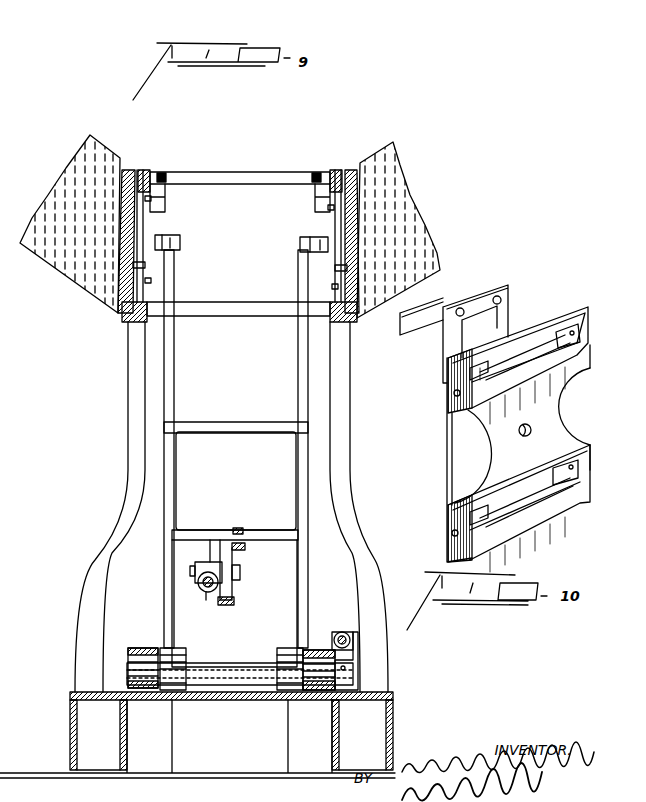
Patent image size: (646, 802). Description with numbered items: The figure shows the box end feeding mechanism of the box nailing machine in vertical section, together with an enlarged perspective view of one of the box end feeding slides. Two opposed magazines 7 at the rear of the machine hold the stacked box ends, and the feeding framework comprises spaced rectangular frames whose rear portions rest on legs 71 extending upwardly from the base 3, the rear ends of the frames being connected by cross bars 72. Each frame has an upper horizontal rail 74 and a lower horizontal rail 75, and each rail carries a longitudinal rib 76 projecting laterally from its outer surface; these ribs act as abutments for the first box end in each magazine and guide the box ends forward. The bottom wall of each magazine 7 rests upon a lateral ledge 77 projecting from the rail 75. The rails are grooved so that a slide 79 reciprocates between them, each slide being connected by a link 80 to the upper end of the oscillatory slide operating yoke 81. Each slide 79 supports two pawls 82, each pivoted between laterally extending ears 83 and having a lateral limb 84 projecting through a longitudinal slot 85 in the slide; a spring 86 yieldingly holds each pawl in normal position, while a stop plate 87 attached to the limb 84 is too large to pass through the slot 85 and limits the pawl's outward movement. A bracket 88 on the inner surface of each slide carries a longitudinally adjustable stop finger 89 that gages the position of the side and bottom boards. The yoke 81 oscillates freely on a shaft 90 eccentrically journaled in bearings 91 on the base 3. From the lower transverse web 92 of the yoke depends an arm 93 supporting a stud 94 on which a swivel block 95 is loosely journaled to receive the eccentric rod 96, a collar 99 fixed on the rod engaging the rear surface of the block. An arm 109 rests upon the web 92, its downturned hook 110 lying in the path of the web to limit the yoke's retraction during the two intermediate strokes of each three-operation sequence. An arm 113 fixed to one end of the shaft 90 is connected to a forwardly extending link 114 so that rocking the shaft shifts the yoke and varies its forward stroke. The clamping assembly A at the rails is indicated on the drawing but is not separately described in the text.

In FIG. 9, the base 3 is at (393, 715).
In FIG. 9, the magazine 7 is at (116, 150).
In FIG. 9, the clamping assembly A is at (134, 170).
In FIG. 9, the leg 71 is at (127, 439).
In FIG. 9, the cross bar 72 is at (238, 172).
In FIG. 9, the upper horizontal rail 74 is at (144, 170).
In FIG. 9, the lower horizontal rail 75 is at (150, 312).
In FIG. 9, the longitudinal rib 76 is at (122, 185).
In FIG. 9, the lateral ledge 77 is at (126, 323).
In FIG. 9, the slide 79 is at (143, 259).
In FIG. 10, the slide 79 is at (499, 428).
In FIG. 9, the link 80 is at (159, 236).
In FIG. 9, the slide operating yoke 81 is at (176, 364).
In FIG. 9, the pawl 82 is at (118, 217).
In FIG. 10, the pawl 82 is at (537, 370).
In FIG. 10, the laterally extending ear 83 is at (580, 330).
In FIG. 10, the lateral limb 84 is at (478, 367).
In FIG. 10, the longitudinal slot 85 is at (533, 348).
In FIG. 10, the spring 86 is at (460, 397).
In FIG. 9, the stop plate 87 is at (151, 199).
In FIG. 9, the bracket 88 is at (165, 212).
In FIG. 10, the bracket 88 is at (446, 335).
In FIG. 9, the stop finger 89 is at (167, 175).
In FIG. 10, the stop finger 89 is at (430, 312).
In FIG. 9, the shaft 90 is at (250, 663).
In FIG. 9, the bearing 91 is at (144, 648).
In FIG. 9, the lower transverse web 92 is at (267, 537).
In FIG. 9, the arm 93 is at (234, 600).
In FIG. 9, the stud 94 is at (195, 570).
In FIG. 9, the swivel block 95 is at (209, 540).
In FIG. 9, the eccentric rod 96 is at (212, 596).
In FIG. 9, the collar 99 is at (202, 590).
In FIG. 9, the arm 109 is at (240, 527).
In FIG. 9, the hook 110 is at (245, 548).
In FIG. 9, the arm 113 is at (358, 642).
In FIG. 9, the link 114 is at (342, 632).